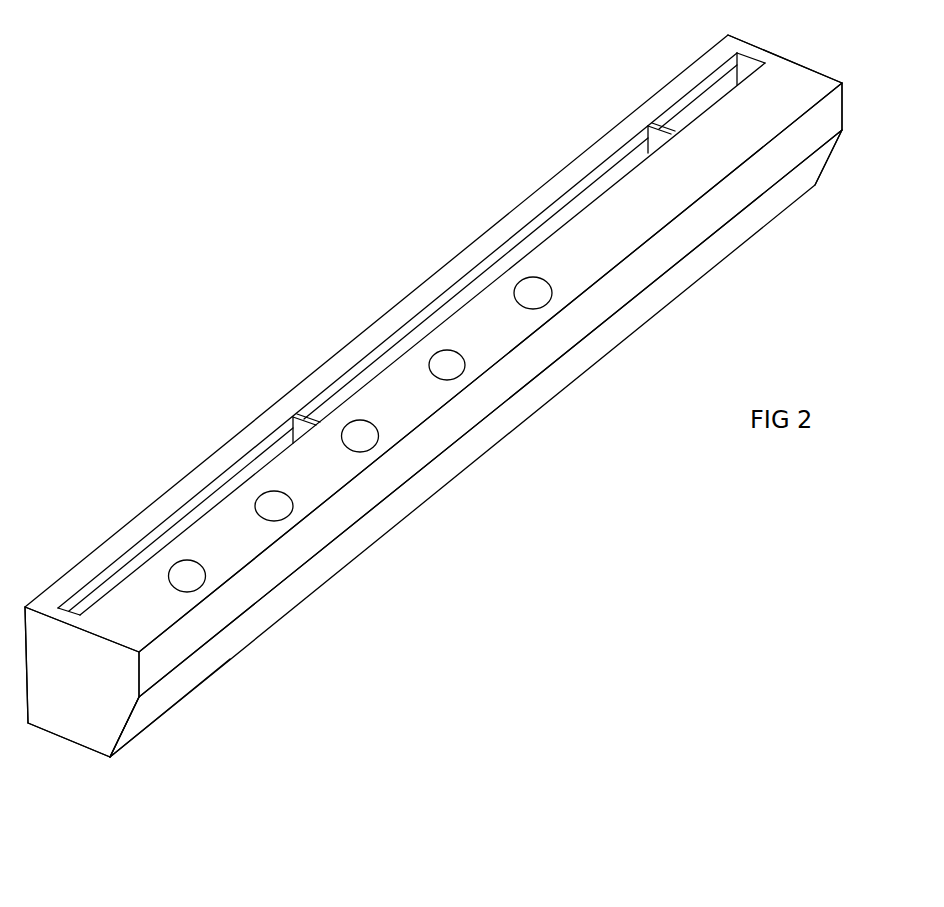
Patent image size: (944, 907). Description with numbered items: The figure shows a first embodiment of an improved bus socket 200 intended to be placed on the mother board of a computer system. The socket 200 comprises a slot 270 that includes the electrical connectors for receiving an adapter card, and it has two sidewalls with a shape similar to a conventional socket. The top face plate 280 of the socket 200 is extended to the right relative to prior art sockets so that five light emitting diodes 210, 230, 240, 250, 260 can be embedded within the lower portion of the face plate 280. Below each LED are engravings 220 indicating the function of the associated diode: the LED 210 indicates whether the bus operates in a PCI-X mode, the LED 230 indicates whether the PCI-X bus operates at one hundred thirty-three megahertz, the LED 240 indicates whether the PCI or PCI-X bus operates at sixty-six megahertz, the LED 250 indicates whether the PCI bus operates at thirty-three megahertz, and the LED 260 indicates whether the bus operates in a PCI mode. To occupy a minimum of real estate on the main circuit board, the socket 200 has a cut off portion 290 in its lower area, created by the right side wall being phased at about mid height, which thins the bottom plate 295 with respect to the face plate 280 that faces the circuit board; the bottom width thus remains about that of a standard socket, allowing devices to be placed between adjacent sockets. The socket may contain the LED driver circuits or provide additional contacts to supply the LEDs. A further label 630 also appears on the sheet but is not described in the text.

The bus socket 200 is at (265, 353).
The light emitting diode 210 is at (590, 381).
The engravings 220 is at (310, 462).
The light emitting diode 230 is at (468, 377).
The light emitting diode 240 is at (365, 470).
The light emitting diode 250 is at (277, 537).
The light emitting diode 260 is at (192, 600).
The slot 270 is at (490, 262).
The top face plate 280 is at (797, 75).
The cut off portion 290 is at (143, 705).
The bottom plate 295 is at (65, 735).
The reference label 630 is at (769, 737).